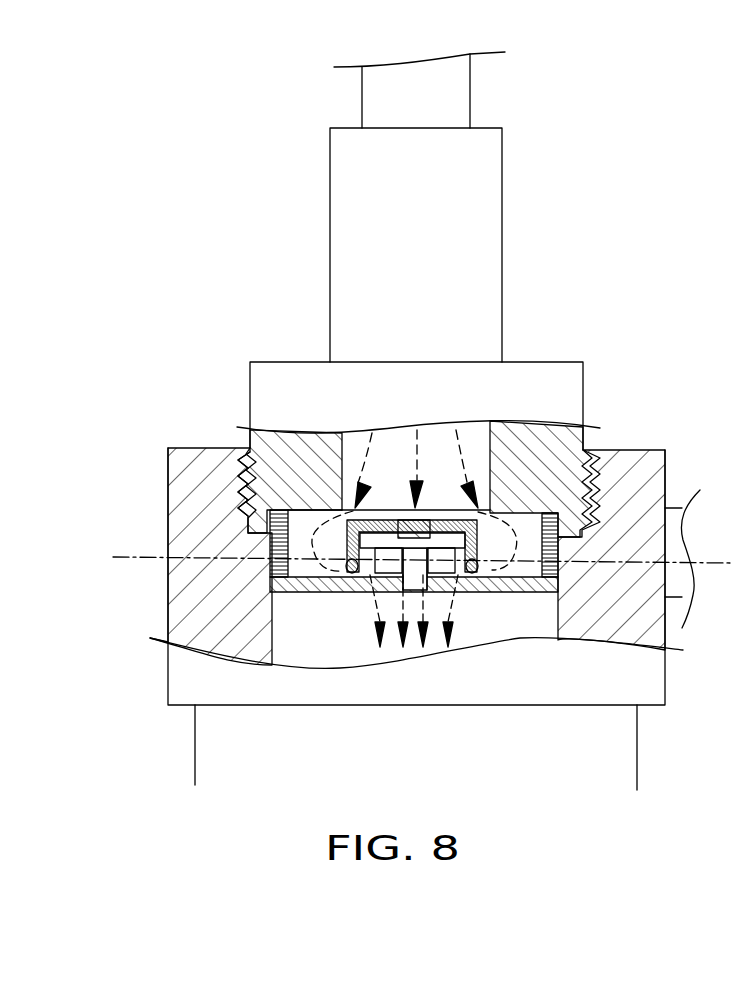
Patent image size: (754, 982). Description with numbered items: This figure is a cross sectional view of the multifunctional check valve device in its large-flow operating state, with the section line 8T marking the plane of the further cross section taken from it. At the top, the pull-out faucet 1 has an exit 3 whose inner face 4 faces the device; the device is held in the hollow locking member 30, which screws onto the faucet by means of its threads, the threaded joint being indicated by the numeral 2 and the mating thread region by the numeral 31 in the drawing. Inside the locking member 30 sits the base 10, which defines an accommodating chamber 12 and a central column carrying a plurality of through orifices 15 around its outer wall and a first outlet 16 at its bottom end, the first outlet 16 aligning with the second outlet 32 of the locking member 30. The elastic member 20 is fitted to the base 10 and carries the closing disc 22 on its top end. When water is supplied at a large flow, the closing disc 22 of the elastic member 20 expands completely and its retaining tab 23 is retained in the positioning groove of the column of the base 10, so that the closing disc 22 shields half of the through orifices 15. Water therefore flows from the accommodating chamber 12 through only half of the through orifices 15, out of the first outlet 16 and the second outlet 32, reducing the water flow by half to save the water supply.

The pull-out faucet 1 is at (303, 375).
The threaded nut (left) 2 is at (240, 500).
The exit 3 is at (433, 435).
The inner face 4 is at (310, 509).
The base 10 is at (293, 580).
The accommodating chamber 12 is at (530, 537).
The through orifices 15 is at (432, 550).
The first outlet 16 is at (392, 550).
The elastic member 20 is at (401, 519).
The closing disc 22 is at (478, 528).
The retaining tab 23 is at (478, 560).
The locking member 30 is at (182, 593).
The thread 31 is at (243, 504).
The second outlet 32 is at (405, 653).
The section line 8T- 8T is at (155, 557).